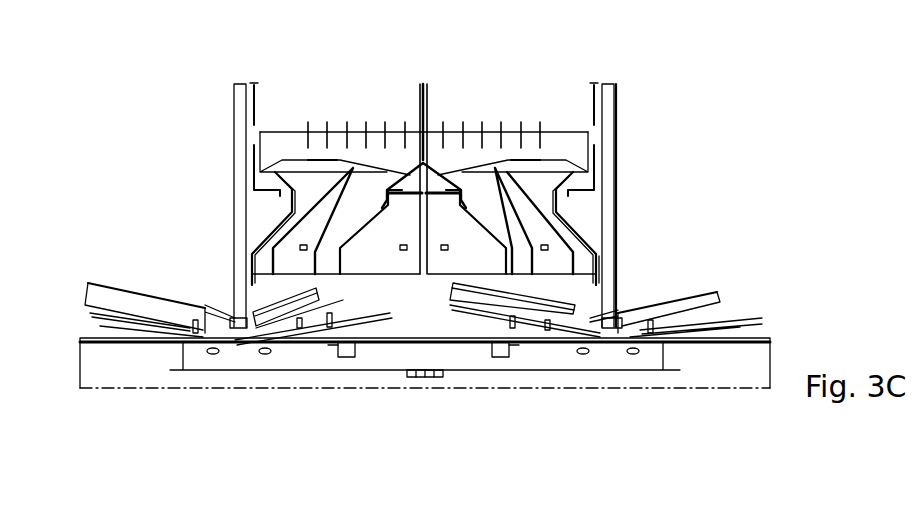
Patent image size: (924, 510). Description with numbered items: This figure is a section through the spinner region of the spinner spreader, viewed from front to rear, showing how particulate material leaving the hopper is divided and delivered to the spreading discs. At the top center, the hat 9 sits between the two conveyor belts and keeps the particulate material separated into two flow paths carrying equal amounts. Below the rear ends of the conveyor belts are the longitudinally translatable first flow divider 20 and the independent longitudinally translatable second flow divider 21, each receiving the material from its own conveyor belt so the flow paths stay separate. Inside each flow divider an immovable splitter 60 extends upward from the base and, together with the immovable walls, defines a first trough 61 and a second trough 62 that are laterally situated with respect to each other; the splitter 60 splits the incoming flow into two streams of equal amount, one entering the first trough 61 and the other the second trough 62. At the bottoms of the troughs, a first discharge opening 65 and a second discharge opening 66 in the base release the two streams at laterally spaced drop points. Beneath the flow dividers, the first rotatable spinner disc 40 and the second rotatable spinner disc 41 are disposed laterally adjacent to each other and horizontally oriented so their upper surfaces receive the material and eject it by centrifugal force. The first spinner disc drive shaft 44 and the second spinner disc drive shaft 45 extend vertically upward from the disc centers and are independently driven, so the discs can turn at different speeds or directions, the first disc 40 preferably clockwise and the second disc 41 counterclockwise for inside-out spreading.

The hat 9 is at (412, 173).
The first flow divider 20 is at (537, 232).
The second flow divider 21 is at (290, 261).
The first rotatable spinner disc 40 is at (131, 0).
The second rotatable spinner disc 41 is at (742, 0).
The first spinner disc drive shaft 44 is at (607, 98).
The second spinner disc drive shaft 45 is at (238, 114).
The splitter 60 is at (497, 178).
The first trough 61 is at (600, 266).
The second trough 62 is at (498, 228).
The first discharge opening 65 is at (565, 286).
The second discharge opening 66 is at (520, 272).